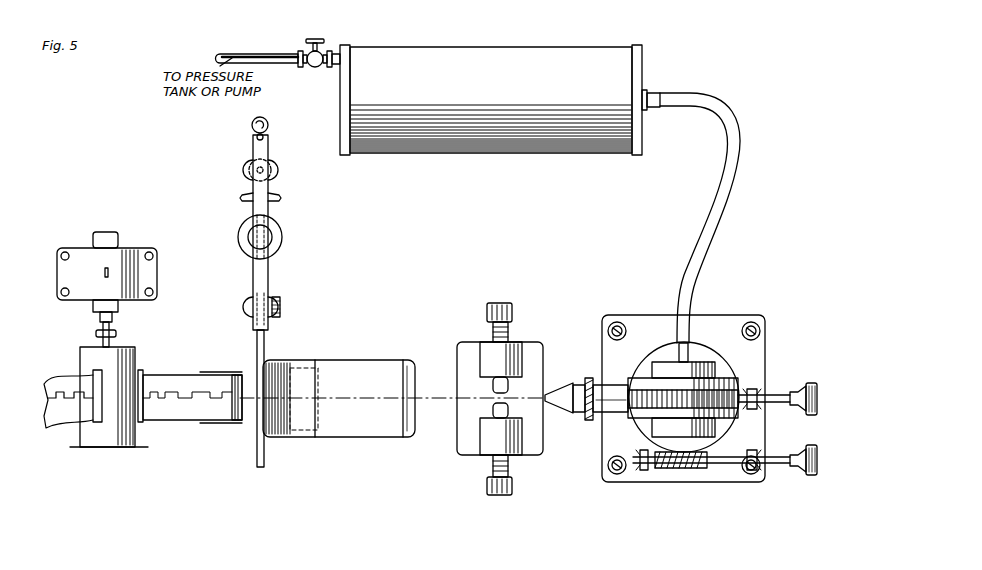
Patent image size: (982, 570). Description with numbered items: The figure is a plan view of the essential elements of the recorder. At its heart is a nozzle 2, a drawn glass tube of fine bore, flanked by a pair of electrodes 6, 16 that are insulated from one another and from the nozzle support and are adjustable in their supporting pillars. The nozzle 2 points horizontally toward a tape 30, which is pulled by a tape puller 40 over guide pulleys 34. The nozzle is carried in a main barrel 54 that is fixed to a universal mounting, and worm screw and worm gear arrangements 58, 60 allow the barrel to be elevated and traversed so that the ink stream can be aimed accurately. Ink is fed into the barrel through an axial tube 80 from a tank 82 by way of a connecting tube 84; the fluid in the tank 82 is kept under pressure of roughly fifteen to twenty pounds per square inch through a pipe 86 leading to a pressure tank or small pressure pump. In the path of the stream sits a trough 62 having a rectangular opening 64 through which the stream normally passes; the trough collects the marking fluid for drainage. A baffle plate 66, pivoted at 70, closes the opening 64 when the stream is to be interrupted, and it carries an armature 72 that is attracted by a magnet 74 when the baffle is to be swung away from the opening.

The nozzle 2 is at (552, 396).
The electrode 6 is at (508, 475).
The electrode 16 is at (508, 338).
The tape 30 is at (178, 380).
The guide pulleys 34 is at (220, 423).
The tape puller 40 is at (135, 355).
The main barrel 54 is at (592, 418).
The worm screw and worm gear arrangement 58 is at (746, 386).
The worm screw and worm gear arrangement 60 is at (708, 468).
The trough 62 is at (372, 437).
The rectangular opening 64 is at (280, 380).
The baffle plate 66 is at (256, 425).
The pivot 70 is at (273, 200).
The armature 72 is at (258, 210).
The magnet 74 is at (283, 244).
The axial tube 80 is at (688, 352).
The tank 82 is at (500, 152).
The connecting tube 84 is at (733, 177).
The pipe 86 is at (246, 56).